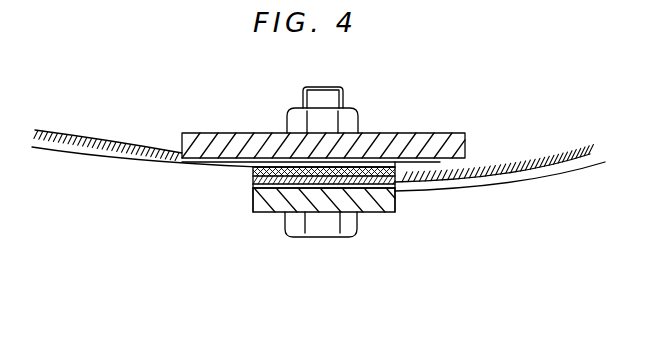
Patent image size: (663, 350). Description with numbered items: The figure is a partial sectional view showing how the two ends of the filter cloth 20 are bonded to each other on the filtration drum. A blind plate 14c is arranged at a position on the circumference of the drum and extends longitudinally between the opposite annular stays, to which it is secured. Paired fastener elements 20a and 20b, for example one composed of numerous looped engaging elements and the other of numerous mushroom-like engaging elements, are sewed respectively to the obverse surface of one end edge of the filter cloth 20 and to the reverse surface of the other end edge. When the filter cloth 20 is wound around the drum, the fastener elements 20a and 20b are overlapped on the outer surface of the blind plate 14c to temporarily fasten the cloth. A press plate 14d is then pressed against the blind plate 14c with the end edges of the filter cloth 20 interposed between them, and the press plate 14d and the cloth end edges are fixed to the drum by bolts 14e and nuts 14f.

The blind plate 14c is at (430, 143).
The press plate 14d is at (367, 207).
The bolts 14e is at (318, 224).
The nuts 14f is at (350, 122).
The filter cloth 20 is at (103, 157).
The fastener element 20a is at (253, 170).
The fastener element 20b is at (398, 192).